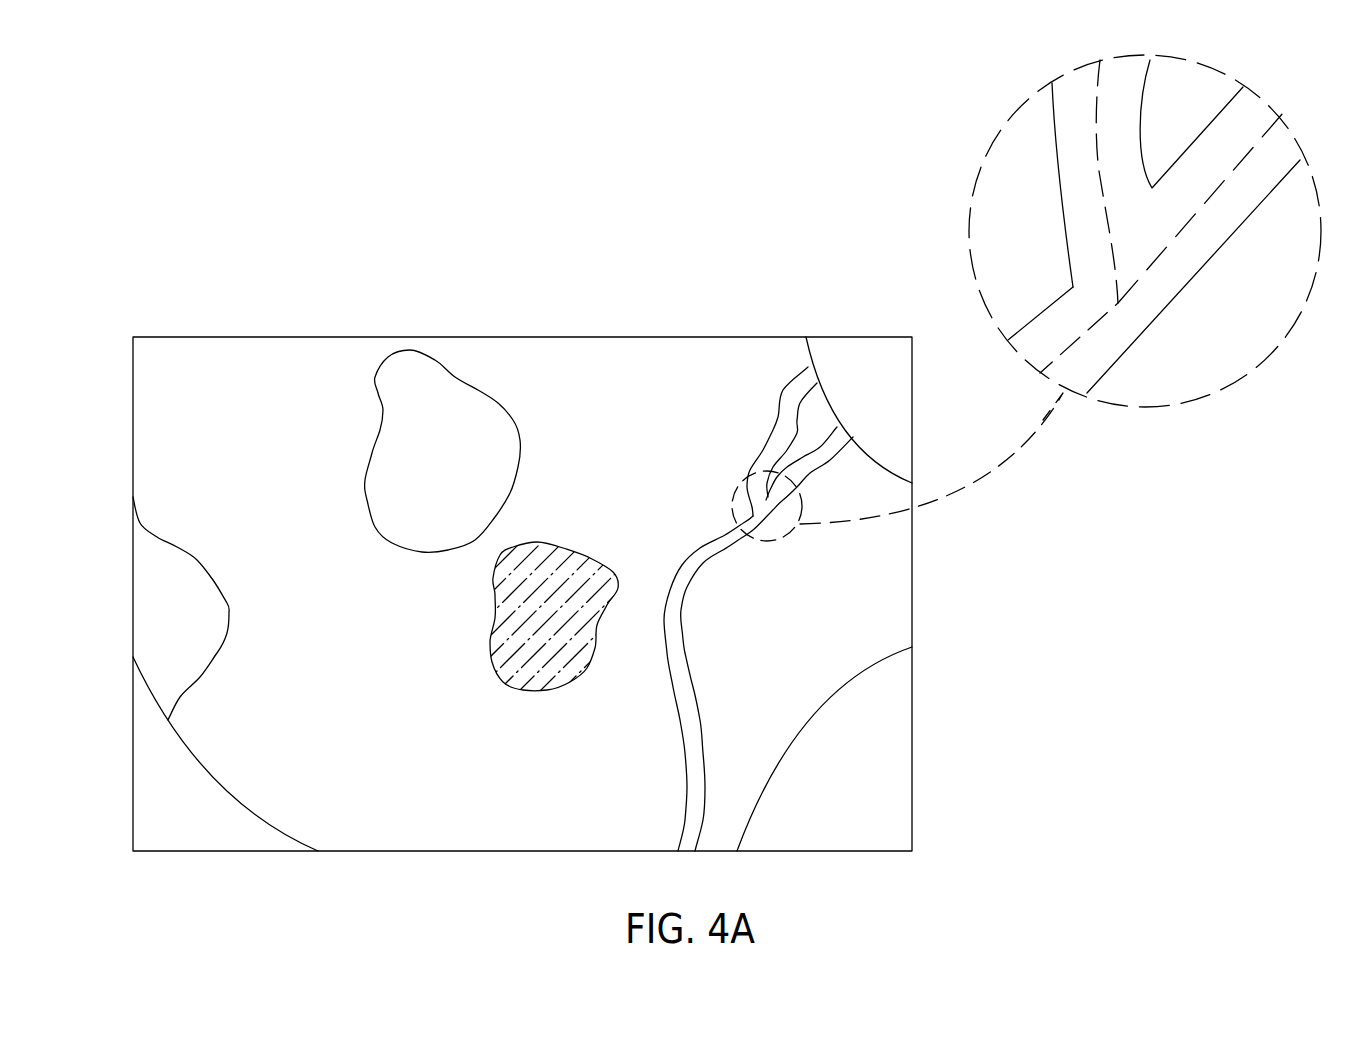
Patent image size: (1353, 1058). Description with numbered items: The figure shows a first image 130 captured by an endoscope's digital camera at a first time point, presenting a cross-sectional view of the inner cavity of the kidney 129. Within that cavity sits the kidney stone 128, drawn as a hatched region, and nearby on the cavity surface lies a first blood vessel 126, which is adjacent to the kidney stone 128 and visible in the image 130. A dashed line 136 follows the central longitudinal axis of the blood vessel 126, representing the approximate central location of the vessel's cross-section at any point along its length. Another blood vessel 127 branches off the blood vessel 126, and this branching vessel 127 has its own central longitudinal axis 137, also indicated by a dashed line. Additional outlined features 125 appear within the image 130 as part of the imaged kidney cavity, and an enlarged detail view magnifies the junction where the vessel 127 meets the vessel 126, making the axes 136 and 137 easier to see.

The anatomical feature 125 is at (488, 416).
The first blood vessel 126 is at (735, 560).
The blood vessel 127 is at (773, 395).
The kidney stone 128 is at (523, 678).
The kidney 129 is at (433, 826).
The first image 130 is at (277, 323).
The central longitudinal axis 136 is at (1202, 219).
The central longitudinal axis 137 is at (1088, 147).